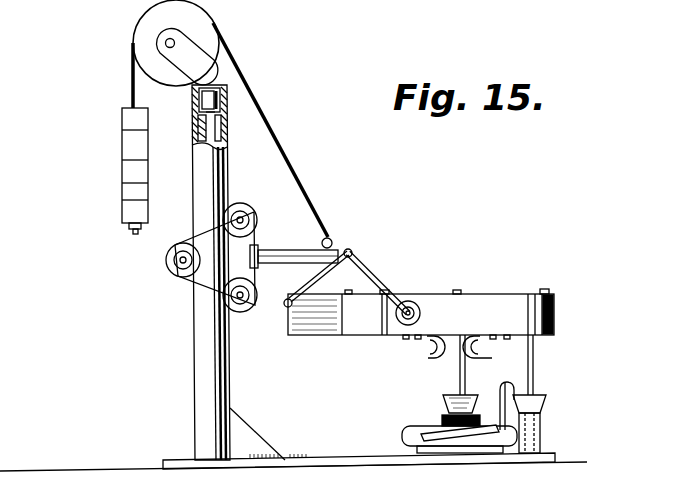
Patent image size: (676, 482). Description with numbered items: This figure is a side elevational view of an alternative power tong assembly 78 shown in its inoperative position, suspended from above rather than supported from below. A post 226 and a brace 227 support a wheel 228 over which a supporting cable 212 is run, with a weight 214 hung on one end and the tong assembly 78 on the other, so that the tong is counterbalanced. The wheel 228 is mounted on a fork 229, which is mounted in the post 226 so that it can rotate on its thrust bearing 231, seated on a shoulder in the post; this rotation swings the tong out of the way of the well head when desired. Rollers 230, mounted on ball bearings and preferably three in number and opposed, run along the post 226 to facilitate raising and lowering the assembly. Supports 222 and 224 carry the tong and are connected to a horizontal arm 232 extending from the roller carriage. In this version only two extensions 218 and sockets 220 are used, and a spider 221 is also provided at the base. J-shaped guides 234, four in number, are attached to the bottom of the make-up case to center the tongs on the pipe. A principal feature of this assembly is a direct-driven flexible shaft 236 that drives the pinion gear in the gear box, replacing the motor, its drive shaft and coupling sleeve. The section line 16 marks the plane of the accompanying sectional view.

The tong assembly 78 is at (512, 291).
The cable 212 is at (131, 92).
The weight 214 is at (124, 190).
The extensions 218 is at (459, 383).
The sockets 220 is at (445, 401).
The spider 221 is at (403, 432).
The support 222 is at (366, 274).
The support 224 is at (307, 279).
The post 226 is at (208, 395).
The brace 227 is at (250, 438).
The wheel 228 is at (133, 31).
The fork 229 is at (208, 96).
The rollers 230 is at (243, 204).
The thrust bearing 231 is at (226, 103).
The horizontal arm 232 is at (289, 249).
The J-shaped guides 234 is at (428, 356).
The flexible shaft 236 is at (313, 320).
The section line 16- 16 is at (166, 361).